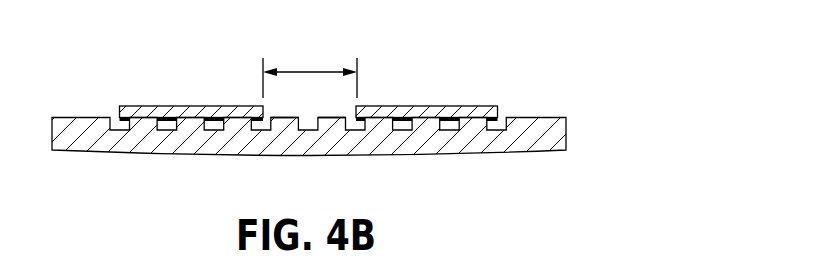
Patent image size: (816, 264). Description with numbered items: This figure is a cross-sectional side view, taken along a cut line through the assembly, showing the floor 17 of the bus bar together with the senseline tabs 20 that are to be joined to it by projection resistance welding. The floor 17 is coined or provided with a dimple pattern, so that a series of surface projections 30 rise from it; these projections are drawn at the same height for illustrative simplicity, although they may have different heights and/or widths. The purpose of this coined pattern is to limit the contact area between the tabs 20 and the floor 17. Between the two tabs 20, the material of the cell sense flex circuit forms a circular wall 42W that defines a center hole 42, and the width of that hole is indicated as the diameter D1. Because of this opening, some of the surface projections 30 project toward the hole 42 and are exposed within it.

The floor 17 is at (352, 142).
The senseline tab 20 is at (463, 105).
The surface projection 30 is at (333, 122).
The center hole 42 is at (297, 100).
The circular wall 42W is at (358, 111).
The diameter D1 is at (309, 72).